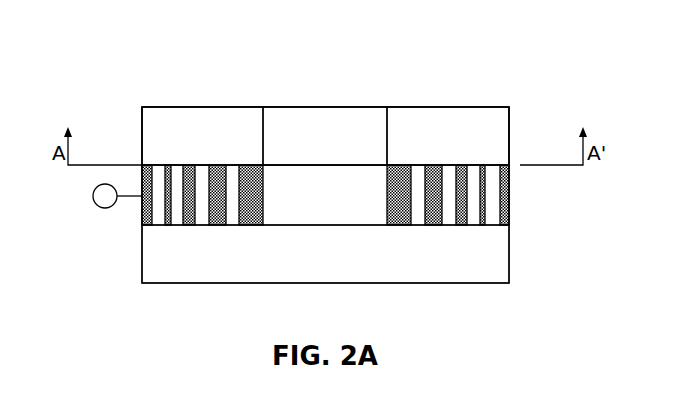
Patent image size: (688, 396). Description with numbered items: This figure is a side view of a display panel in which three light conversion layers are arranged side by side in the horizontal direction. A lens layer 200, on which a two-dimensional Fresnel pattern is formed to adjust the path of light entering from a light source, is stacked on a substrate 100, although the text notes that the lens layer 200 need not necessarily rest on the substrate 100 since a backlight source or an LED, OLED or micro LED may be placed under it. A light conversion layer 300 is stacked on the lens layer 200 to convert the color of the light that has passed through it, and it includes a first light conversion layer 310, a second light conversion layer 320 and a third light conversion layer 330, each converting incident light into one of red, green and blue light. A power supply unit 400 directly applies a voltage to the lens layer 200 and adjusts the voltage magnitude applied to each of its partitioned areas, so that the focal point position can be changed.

The substrate 100 is at (510, 254).
The lens layer 200 is at (510, 196).
The light conversion layer 300 is at (325, 89).
The first light conversion layer 310 is at (203, 123).
The second light conversion layer 320 is at (327, 122).
The third light conversion layer 330 is at (448, 112).
The power supply unit 400 is at (92, 195).